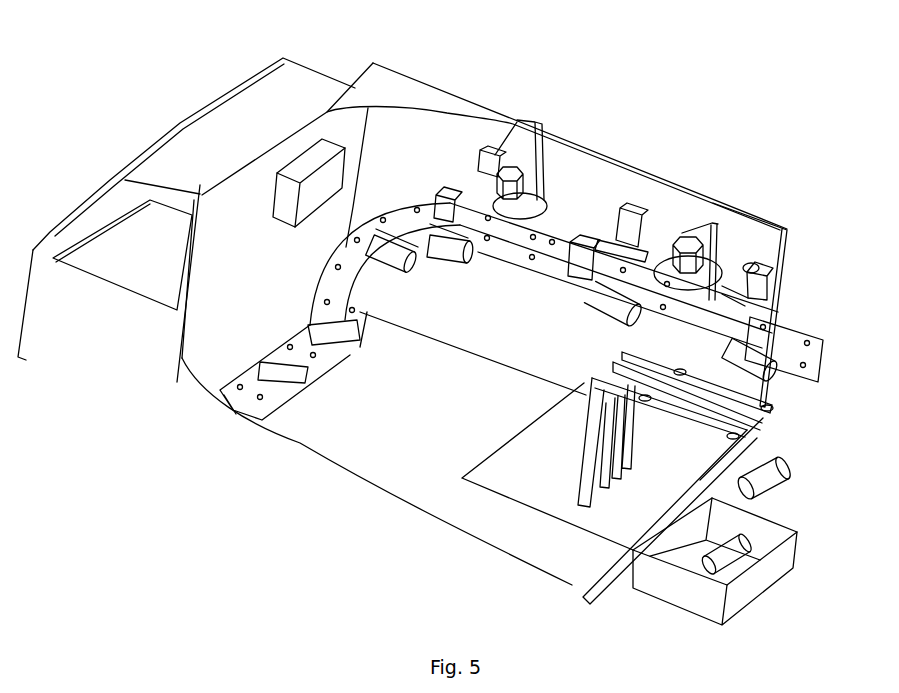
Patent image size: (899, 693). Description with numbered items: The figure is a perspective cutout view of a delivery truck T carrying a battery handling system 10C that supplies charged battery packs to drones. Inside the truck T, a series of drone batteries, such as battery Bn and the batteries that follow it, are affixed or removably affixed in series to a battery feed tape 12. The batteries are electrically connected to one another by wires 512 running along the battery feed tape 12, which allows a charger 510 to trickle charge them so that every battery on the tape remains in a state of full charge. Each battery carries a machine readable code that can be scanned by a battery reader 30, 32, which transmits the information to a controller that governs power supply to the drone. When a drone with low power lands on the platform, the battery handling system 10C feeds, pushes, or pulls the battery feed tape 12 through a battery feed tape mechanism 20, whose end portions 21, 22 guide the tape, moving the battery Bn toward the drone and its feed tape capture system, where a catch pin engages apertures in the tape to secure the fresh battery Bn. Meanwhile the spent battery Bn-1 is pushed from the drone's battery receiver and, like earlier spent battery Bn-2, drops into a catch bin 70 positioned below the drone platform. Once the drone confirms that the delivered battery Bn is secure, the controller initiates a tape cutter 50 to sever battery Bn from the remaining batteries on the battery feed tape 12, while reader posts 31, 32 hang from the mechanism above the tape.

The delivery truck T is at (217, 125).
The charger 510 is at (313, 150).
The wires 512 is at (305, 205).
The battery feed tape 12 is at (325, 275).
The battery handling system 10C is at (600, 203).
The battery feed tape mechanism 20 is at (642, 130).
The guide rail first end 21 is at (621, 232).
The guide rail second end 22 is at (737, 207).
The battery reader 30 is at (625, 187).
The first carriage post 31 is at (519, 160).
The battery reader 32 is at (672, 183).
The tape cutter 50 is at (782, 280).
The battery Bn is at (777, 327).
The spent battery Bn-1 is at (779, 476).
The fastening element n-2 Bn-2 is at (757, 522).
The catch bin 70 is at (768, 572).